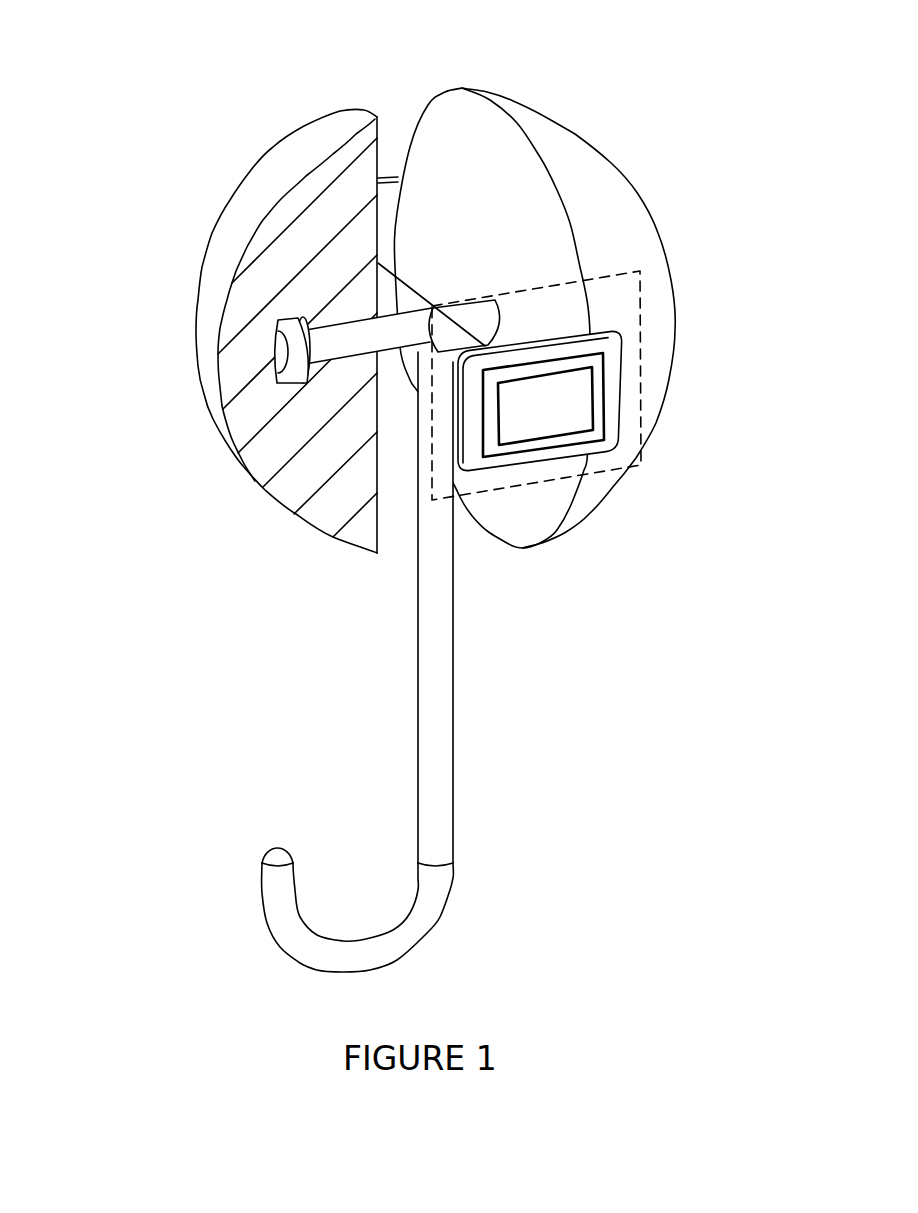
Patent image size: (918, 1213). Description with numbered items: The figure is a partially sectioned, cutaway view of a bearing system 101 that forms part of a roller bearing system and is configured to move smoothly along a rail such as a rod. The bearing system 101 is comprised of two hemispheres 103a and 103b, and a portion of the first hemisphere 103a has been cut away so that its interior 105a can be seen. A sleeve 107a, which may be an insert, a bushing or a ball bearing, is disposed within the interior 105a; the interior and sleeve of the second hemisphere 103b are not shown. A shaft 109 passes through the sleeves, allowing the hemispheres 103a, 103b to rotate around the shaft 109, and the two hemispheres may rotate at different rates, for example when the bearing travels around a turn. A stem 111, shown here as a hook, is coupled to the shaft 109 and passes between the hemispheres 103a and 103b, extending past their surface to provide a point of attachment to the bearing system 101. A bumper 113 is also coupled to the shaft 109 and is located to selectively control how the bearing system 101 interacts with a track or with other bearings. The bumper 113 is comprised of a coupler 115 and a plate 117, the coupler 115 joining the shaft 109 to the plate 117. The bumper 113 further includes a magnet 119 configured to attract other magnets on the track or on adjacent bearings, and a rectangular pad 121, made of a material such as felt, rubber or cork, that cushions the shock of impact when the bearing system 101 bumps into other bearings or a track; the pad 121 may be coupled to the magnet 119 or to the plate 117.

The bearing system 101 is at (442, 488).
The hemisphere 103a is at (297, 303).
The hemisphere 103b is at (617, 163).
The interior 105a is at (335, 167).
The sleeve 107a is at (277, 330).
The shaft 109 is at (357, 327).
The stem 111 is at (454, 660).
The bumper 113 is at (643, 312).
The coupler 115 is at (478, 348).
The plate 117 is at (624, 375).
The magnet 119 is at (605, 392).
The pad 121 is at (594, 410).